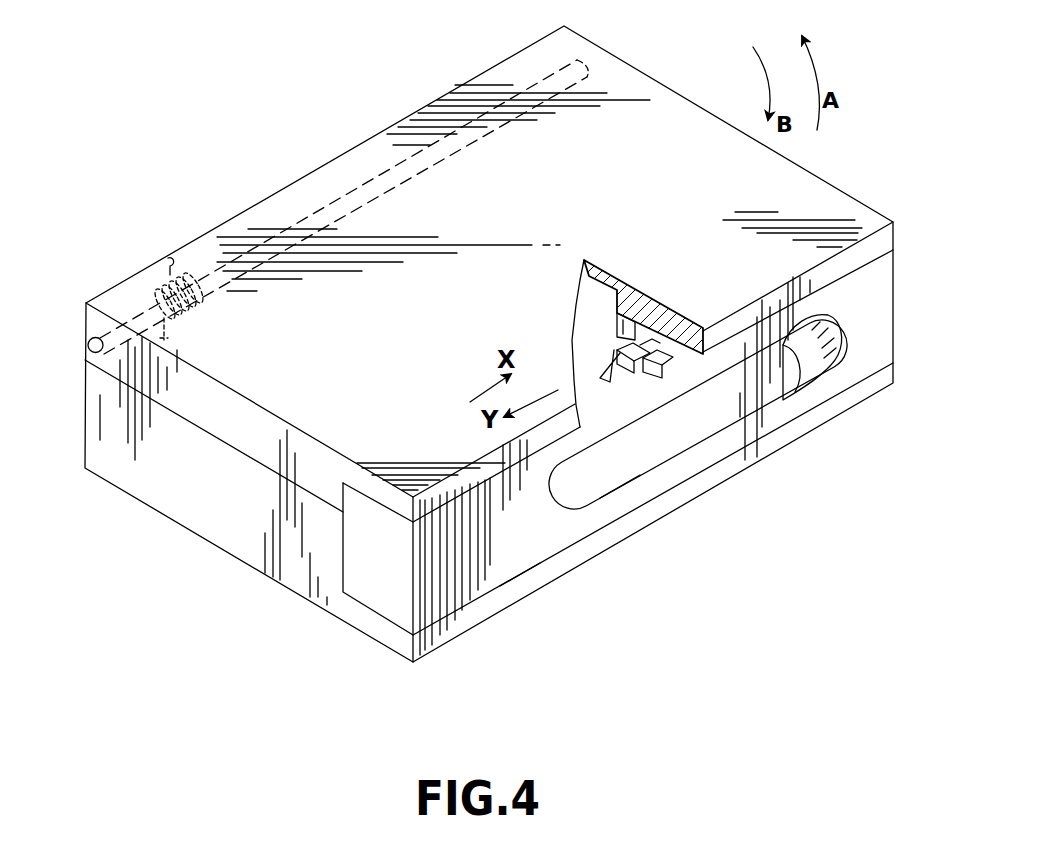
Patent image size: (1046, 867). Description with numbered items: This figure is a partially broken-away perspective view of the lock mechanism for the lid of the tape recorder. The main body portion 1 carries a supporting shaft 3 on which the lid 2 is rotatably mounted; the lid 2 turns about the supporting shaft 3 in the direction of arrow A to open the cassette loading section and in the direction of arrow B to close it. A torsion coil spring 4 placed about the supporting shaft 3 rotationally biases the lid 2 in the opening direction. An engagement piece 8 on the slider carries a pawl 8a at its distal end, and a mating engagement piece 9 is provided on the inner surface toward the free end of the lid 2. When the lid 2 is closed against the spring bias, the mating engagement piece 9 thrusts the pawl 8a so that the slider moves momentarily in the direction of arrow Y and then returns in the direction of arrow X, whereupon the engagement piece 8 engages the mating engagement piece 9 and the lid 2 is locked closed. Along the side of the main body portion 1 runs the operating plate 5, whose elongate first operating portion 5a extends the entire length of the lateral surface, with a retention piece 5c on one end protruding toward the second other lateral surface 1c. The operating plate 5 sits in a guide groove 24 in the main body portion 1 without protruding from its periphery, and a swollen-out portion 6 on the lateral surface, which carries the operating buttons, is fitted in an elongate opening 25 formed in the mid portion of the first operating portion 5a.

The main body portion 1 is at (253, 550).
The second other lateral surface 1c is at (130, 475).
The lid 2 is at (840, 203).
The supporting shaft 3 is at (380, 185).
The torsion coil spring 4 is at (216, 288).
The operating plate 5 is at (567, 528).
The first operating portion 5a is at (487, 575).
The retention piece 5c is at (377, 588).
The swollen-out portion 6 is at (697, 427).
The engagement piece 8 is at (616, 362).
The pawl 8a is at (652, 340).
The mating engagement piece 9 is at (658, 352).
The guide groove 24 is at (845, 378).
The opening 25 is at (638, 473).